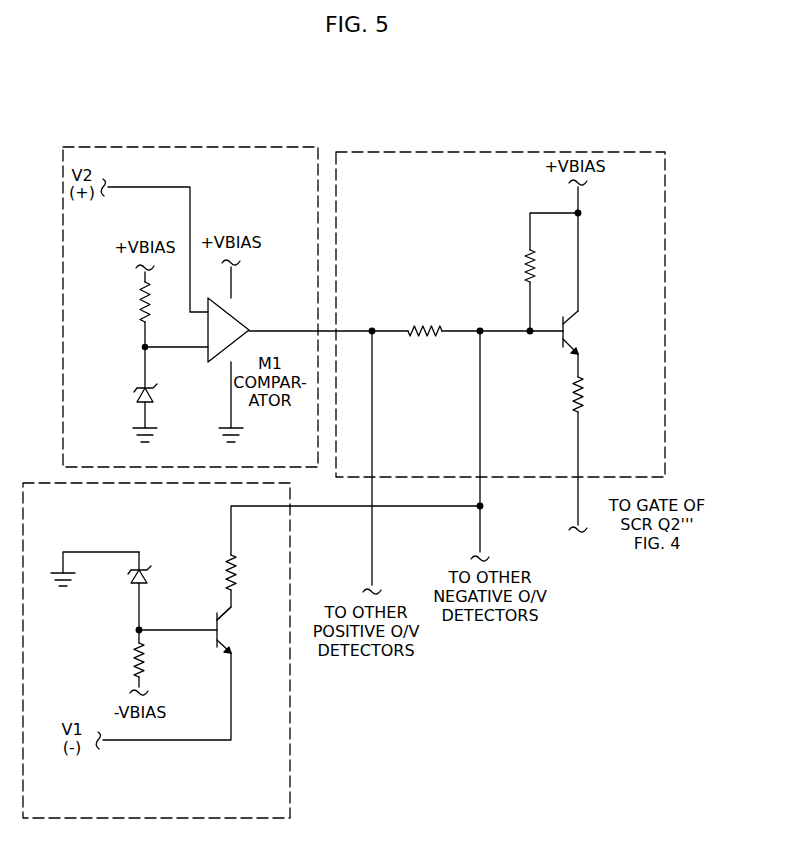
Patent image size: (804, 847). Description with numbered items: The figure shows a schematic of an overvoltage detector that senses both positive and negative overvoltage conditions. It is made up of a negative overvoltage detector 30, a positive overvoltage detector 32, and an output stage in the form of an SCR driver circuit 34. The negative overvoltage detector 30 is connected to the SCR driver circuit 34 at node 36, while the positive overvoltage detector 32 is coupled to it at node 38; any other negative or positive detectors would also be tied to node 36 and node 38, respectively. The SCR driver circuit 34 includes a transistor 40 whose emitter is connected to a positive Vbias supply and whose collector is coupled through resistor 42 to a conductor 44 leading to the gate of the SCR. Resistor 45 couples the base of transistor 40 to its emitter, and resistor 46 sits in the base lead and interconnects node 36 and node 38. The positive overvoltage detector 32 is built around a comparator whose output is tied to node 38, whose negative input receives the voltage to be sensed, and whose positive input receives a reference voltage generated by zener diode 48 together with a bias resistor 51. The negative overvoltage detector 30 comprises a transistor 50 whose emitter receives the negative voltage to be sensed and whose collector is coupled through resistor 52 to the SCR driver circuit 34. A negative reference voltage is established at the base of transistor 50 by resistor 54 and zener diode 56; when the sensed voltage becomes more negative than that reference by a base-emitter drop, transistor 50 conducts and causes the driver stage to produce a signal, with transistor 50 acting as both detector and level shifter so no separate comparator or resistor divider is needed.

The negative overvoltage detector 30 is at (290, 800).
The positive overvoltage detector 32 is at (228, 147).
The SCR driver circuit 34 is at (471, 152).
The node 36 is at (478, 307).
The node 38 is at (369, 310).
The transistor 40 is at (575, 338).
The resistor 42 is at (586, 397).
The conductor 44 is at (576, 503).
The resistor 45 is at (537, 255).
The resistor 46 is at (424, 327).
The zener diode 48 is at (137, 401).
The transistor 50 is at (233, 632).
The resistor 51 is at (140, 314).
The resistor 52 is at (238, 578).
The resistor 54 is at (134, 662).
The zener diode 56 is at (150, 578).